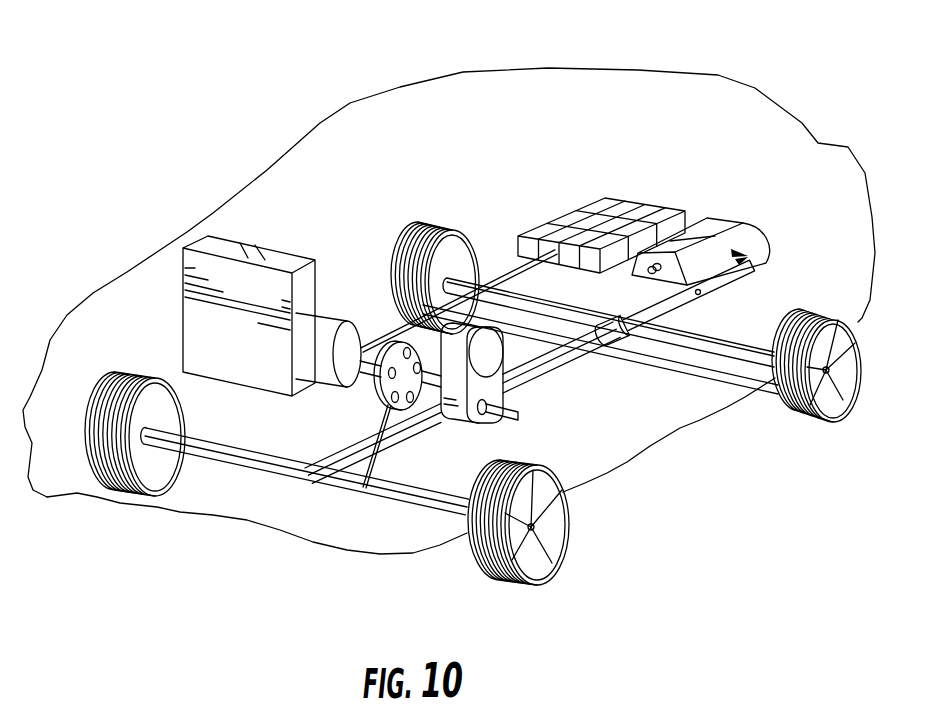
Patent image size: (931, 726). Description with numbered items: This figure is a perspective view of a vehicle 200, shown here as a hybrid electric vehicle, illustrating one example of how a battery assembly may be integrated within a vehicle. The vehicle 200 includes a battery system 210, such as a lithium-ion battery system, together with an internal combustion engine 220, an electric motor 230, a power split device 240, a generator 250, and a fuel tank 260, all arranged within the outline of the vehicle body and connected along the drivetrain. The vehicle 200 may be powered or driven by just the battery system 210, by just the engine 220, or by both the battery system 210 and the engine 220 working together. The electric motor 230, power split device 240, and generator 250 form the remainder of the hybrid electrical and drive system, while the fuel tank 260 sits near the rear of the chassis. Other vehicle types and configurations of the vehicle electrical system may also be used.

The vehicle 200 is at (783, 83).
The battery system 210 is at (642, 188).
The internal combustion engine 220 is at (207, 262).
The electric motor 230 is at (328, 328).
The power split device 240 is at (380, 393).
The generator 250 is at (463, 423).
The fuel tank 260 is at (747, 231).